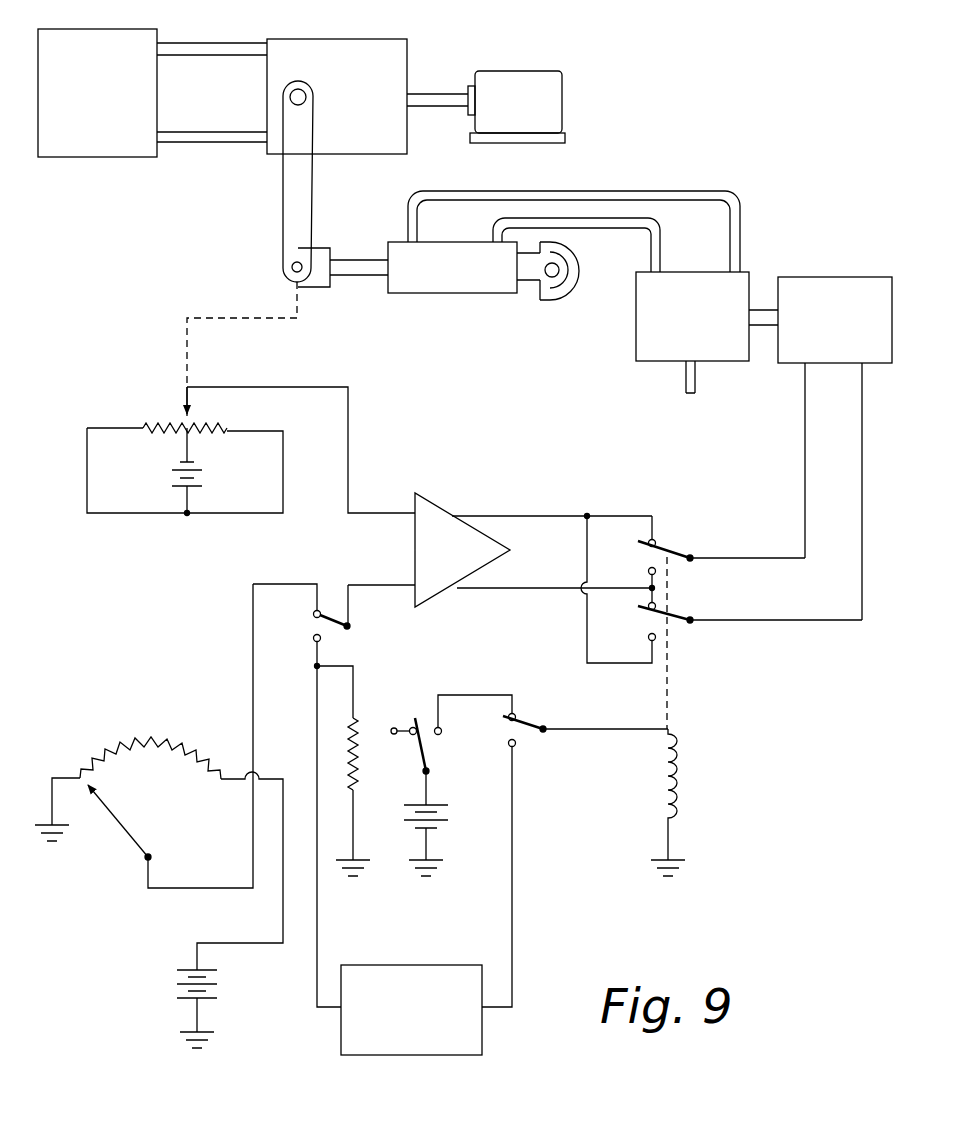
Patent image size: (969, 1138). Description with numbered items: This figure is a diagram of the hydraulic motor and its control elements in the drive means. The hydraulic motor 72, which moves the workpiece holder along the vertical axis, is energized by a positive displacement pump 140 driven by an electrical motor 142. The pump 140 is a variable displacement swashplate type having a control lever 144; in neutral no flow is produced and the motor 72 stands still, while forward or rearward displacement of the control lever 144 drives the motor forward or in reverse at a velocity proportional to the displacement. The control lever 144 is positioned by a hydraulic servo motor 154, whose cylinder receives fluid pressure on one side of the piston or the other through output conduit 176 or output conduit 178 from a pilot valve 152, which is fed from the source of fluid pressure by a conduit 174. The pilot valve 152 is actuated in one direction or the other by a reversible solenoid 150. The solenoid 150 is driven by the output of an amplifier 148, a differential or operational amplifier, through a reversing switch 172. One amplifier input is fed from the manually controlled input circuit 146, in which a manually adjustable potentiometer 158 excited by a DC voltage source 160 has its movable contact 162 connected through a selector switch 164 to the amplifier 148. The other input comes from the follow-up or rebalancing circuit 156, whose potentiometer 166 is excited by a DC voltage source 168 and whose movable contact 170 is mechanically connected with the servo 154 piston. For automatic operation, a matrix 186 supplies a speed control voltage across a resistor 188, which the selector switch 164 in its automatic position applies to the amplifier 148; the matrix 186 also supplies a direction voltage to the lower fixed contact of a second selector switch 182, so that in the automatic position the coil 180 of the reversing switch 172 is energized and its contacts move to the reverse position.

The hydraulic motor 72 is at (88, 142).
The positive displacement pump 140 is at (342, 52).
The electrical motor 142 is at (565, 76).
The control lever 144 is at (297, 180).
The hydraulic servo motor 154 is at (473, 272).
The output conduit 176 is at (672, 193).
The output conduit 178 is at (588, 222).
The pilot valve 152 is at (645, 303).
The conduit 174 is at (686, 378).
The reversible solenoid 150 is at (827, 285).
The follow-up or rebalancing circuit 156 is at (132, 414).
The movable contact 170 is at (180, 422).
The potentiometer 166 is at (215, 428).
The DC voltage source 168 is at (172, 478).
The amplifier 148 is at (430, 515).
The selector switch 164 is at (352, 640).
The reversing switch 172 is at (675, 548).
The manually controlled input circuit 146 is at (108, 720).
The manually adjustable potentiometer 158 is at (160, 752).
The movable contact 162 is at (117, 822).
The DC voltage source 160 is at (180, 998).
The resistor 188 is at (360, 742).
The matrix 186 is at (432, 1037).
The selector switch 182 is at (540, 724).
The coil 180 is at (678, 787).